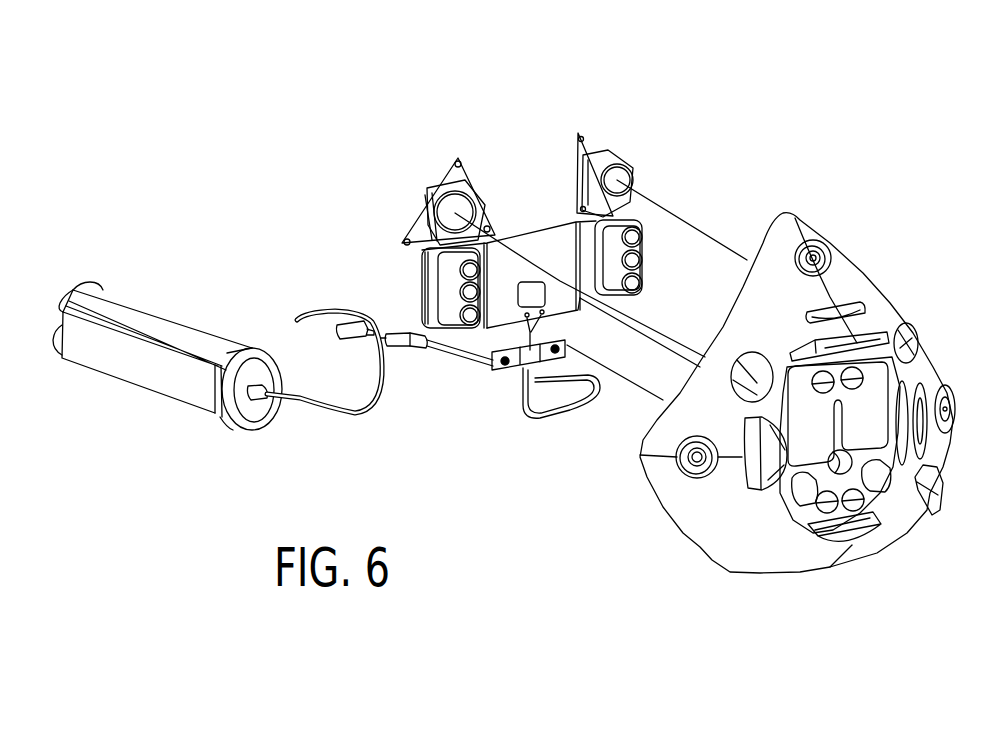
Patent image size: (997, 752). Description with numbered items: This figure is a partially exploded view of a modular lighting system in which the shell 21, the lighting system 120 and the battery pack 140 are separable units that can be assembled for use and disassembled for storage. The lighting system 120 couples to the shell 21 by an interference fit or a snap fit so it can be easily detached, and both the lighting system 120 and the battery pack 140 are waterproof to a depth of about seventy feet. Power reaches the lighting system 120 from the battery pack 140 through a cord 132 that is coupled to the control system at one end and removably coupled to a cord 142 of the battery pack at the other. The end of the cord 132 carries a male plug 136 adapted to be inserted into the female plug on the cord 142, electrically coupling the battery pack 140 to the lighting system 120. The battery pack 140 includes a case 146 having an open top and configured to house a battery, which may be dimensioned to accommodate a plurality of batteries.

The shell 21 is at (667, 552).
The lighting system 120 is at (462, 118).
The cord 132 is at (463, 358).
The male plug 136 is at (403, 335).
The battery pack 140 is at (141, 262).
The cord 142 is at (343, 420).
The case 146 is at (347, 338).